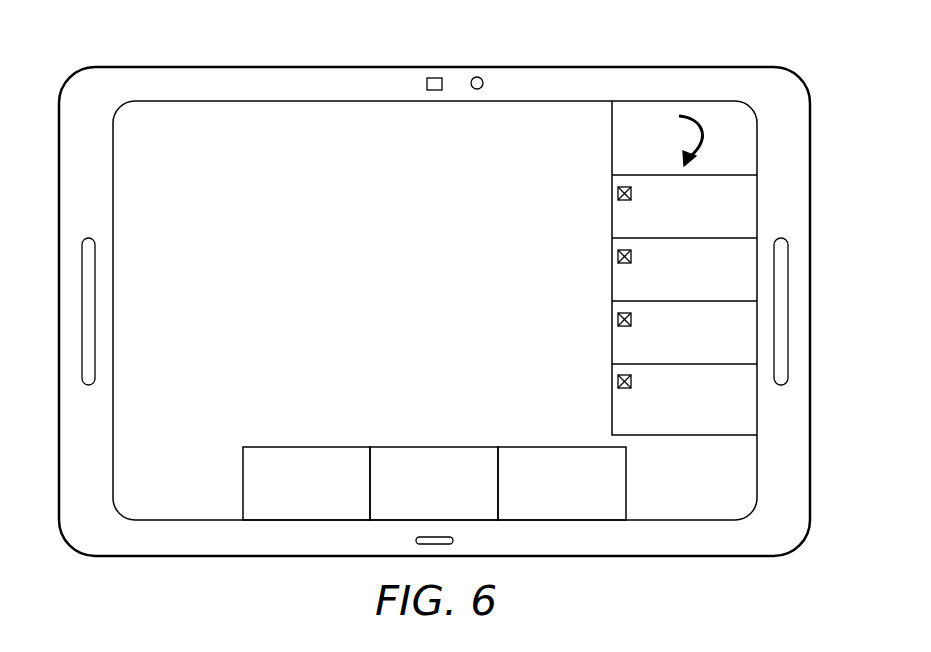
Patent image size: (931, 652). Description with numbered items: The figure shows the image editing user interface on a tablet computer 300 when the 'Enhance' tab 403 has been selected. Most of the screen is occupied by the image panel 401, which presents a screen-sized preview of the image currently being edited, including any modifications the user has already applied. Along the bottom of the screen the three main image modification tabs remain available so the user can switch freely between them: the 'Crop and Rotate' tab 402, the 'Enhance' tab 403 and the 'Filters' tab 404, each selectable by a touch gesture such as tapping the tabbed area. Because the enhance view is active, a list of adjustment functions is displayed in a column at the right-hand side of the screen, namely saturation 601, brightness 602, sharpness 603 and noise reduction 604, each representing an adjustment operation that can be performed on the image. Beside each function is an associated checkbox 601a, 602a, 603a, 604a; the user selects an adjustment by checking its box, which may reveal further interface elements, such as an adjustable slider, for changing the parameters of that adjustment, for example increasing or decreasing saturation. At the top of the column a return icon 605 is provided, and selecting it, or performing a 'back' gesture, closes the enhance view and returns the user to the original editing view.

The tablet computer 300 is at (688, 54).
The image panel 401 is at (453, 185).
The image modification tab 402 is at (304, 447).
The image modification tab 403 is at (434, 447).
The image modification tab 404 is at (561, 447).
The saturation 601 is at (611, 231).
The checkbox 601a is at (618, 194).
The brightness 602 is at (611, 294).
The checkbox 602a is at (618, 256).
The sharpness 603 is at (611, 357).
The checkbox 603a is at (618, 319).
The noise reduction 604 is at (682, 437).
The checkbox 604a is at (618, 381).
The return icon 605 is at (657, 126).